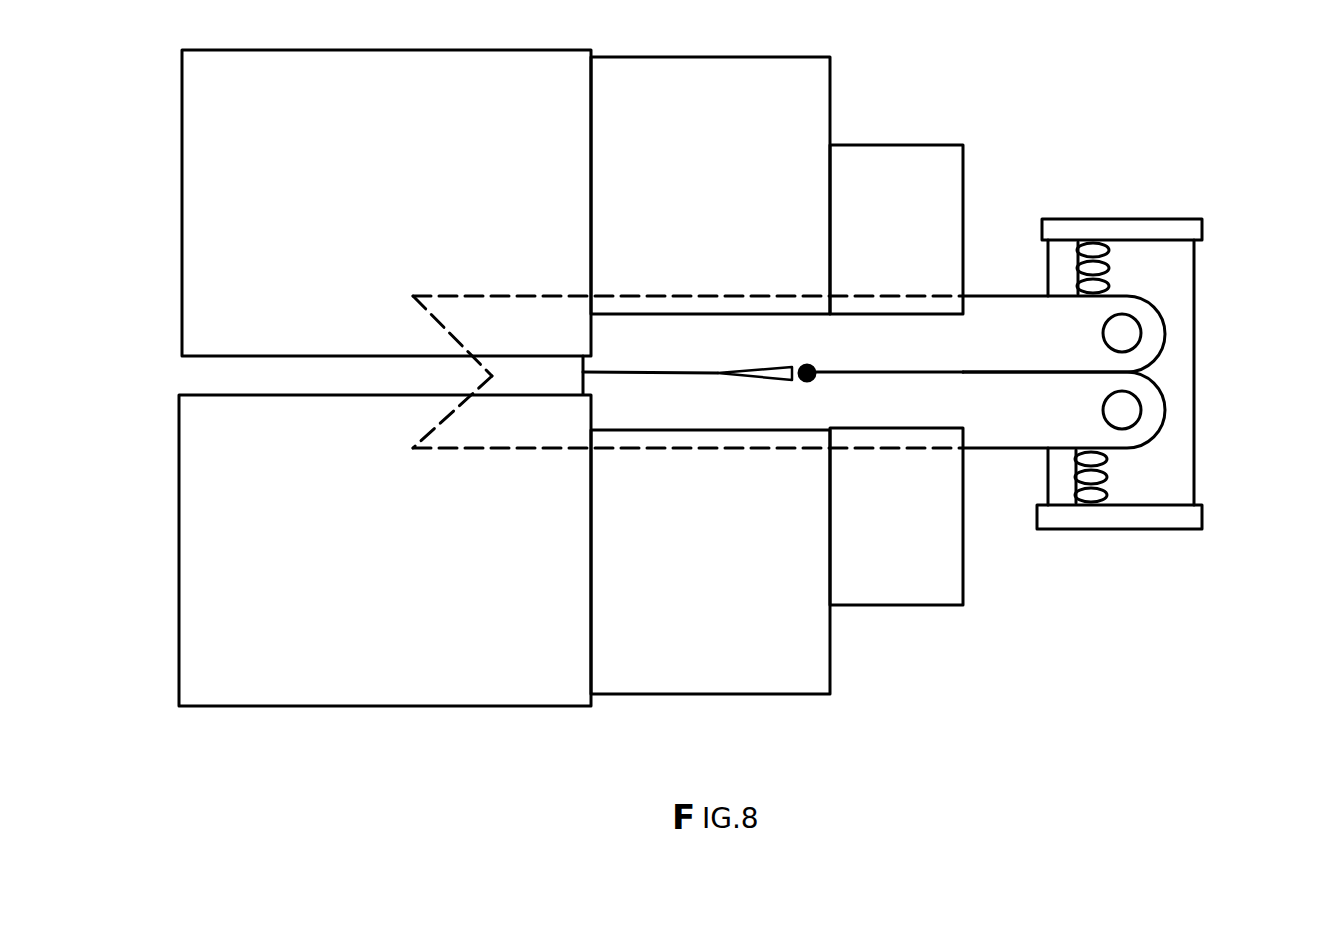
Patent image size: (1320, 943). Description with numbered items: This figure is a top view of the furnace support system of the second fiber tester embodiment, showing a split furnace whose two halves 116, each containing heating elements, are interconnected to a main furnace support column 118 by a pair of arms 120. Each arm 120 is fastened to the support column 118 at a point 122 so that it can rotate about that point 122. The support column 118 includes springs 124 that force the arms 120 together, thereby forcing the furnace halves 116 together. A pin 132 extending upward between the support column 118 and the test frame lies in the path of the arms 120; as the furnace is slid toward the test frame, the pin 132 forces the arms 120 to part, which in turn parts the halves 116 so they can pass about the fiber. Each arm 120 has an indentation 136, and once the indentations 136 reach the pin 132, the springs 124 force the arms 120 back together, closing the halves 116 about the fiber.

The furnace half 116 is at (384, 216).
The main furnace support column 118 is at (1165, 218).
The arm 120 is at (1028, 352).
The point 122 is at (1130, 331).
The spring 124 is at (1068, 480).
The pin 132 is at (808, 364).
The indentation 136 is at (785, 366).